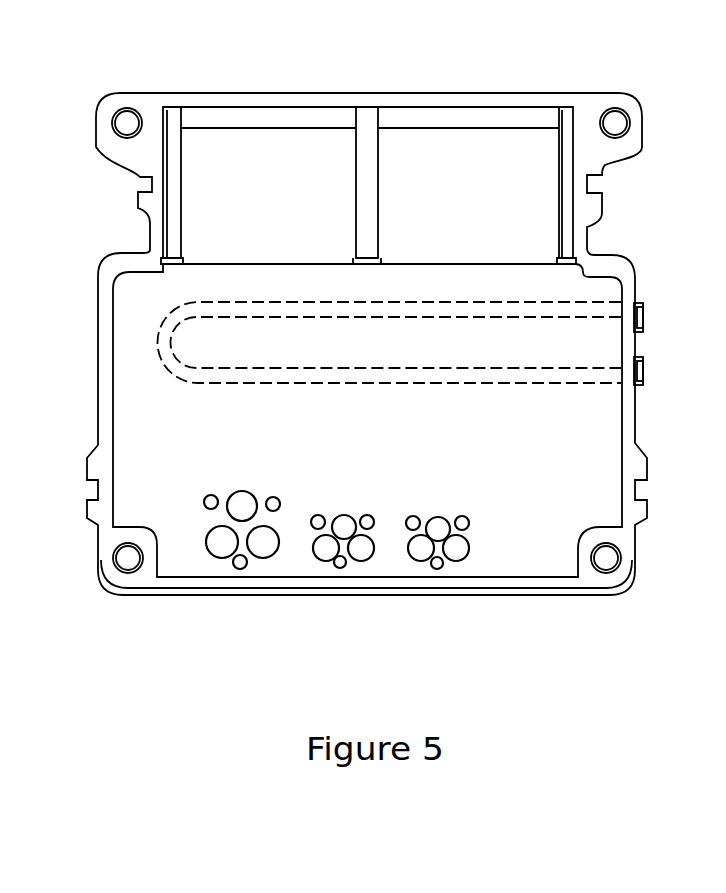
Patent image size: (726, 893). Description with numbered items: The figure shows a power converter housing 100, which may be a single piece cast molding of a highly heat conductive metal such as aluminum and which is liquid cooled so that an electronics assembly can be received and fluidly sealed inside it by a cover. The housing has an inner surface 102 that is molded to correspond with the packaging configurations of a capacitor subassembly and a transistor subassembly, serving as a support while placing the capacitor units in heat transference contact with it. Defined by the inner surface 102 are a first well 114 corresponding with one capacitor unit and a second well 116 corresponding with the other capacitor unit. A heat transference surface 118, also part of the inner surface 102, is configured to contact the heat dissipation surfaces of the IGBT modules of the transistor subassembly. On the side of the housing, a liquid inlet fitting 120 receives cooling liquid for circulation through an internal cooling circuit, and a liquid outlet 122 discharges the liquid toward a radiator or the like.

The power converter housing 100 is at (80, 384).
The inner surface 102 is at (445, 120).
The first well 114 is at (547, 246).
The second well 116 is at (195, 184).
The heat transference surface 118 is at (578, 357).
The liquid inlet fitting 120 is at (643, 314).
The liquid outlet 122 is at (643, 369).